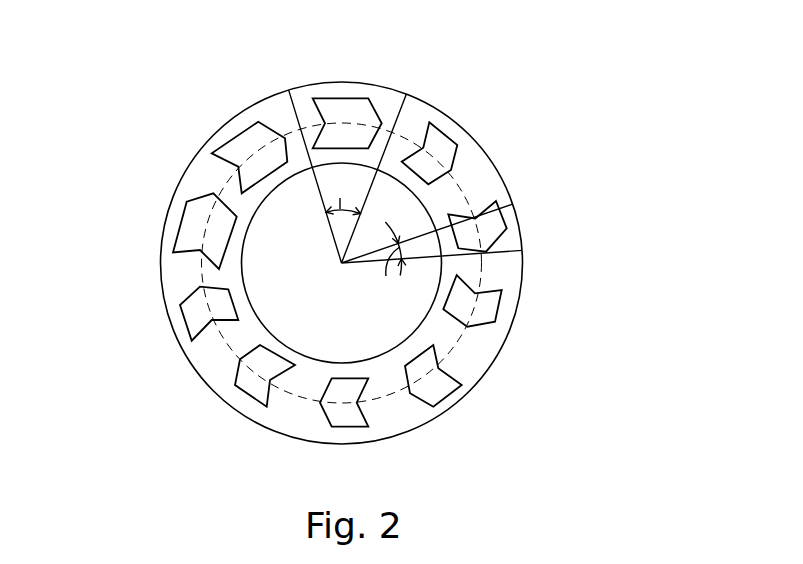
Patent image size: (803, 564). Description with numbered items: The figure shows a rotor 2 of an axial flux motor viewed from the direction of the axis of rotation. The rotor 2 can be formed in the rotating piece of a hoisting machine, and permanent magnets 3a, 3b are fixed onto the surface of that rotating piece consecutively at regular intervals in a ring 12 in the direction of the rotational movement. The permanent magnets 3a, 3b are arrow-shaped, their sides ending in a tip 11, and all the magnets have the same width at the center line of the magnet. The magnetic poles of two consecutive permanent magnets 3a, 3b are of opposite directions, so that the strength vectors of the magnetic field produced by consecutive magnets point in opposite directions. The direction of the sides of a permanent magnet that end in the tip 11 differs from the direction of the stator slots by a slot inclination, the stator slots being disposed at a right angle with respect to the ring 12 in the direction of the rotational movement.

The rotor 2 is at (565, 108).
The permanent magnet 3a is at (193, 198).
The permanent magnet 3b is at (240, 128).
The tip 11 is at (200, 287).
The ring 12 is at (458, 345).